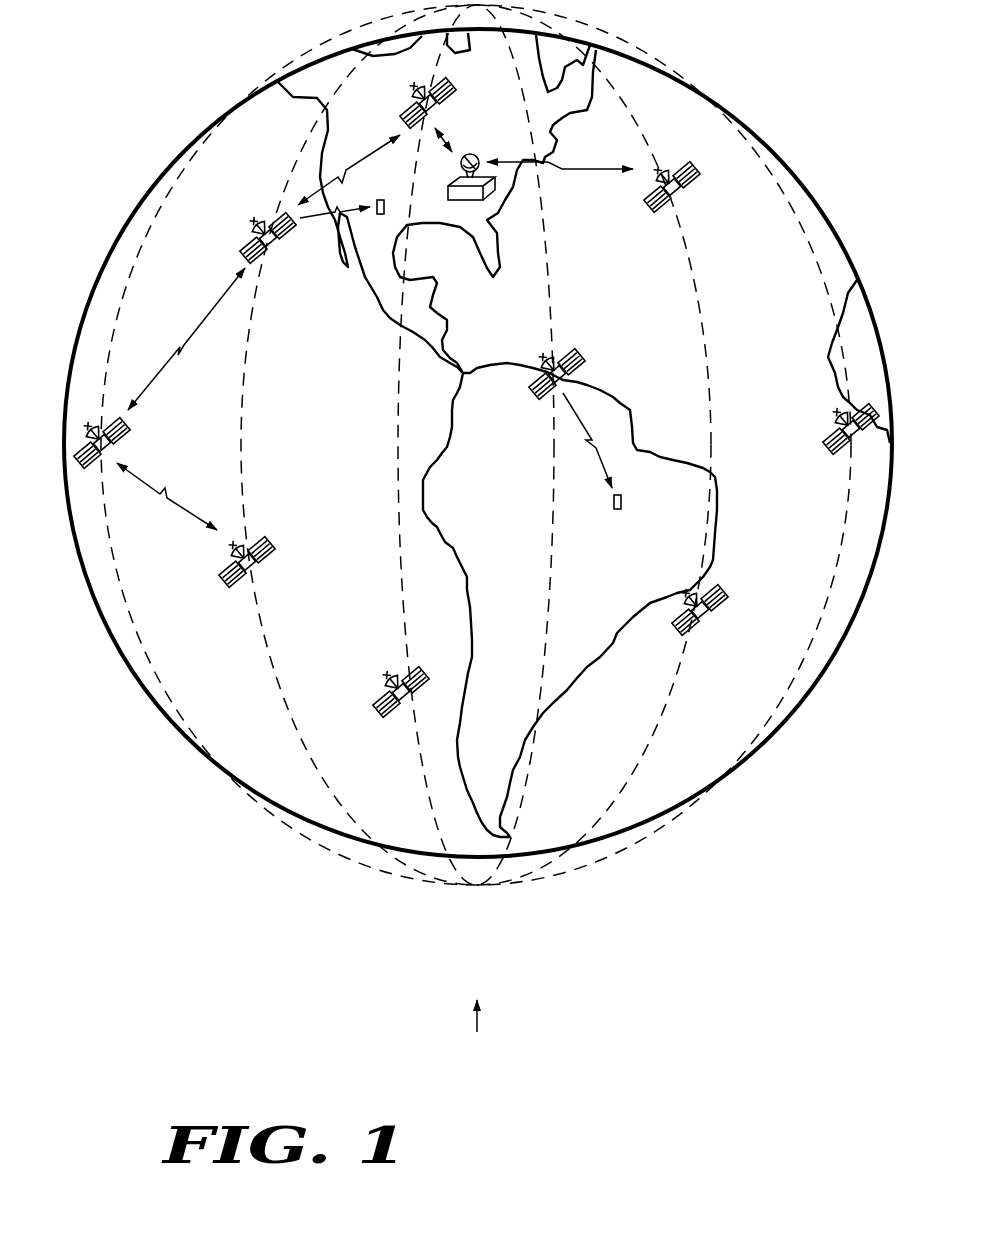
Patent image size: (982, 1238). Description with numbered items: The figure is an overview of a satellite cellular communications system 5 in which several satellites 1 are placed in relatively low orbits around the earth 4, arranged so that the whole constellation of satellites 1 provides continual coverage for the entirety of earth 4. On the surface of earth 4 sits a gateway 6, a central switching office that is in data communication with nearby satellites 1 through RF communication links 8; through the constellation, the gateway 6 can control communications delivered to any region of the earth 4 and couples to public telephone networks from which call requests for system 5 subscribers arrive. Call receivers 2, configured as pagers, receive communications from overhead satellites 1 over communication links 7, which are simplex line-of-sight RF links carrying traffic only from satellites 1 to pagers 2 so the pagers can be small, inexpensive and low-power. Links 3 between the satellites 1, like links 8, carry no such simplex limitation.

The satellite 1 is at (693, 182).
The call receiver 2 is at (383, 213).
The link 3 is at (368, 162).
The earth 4 is at (88, 296).
The satellite cellular communications system 5 is at (477, 1035).
The gateway 6 is at (492, 190).
The communication link 7 is at (330, 222).
The RF communication link 8 is at (458, 133).